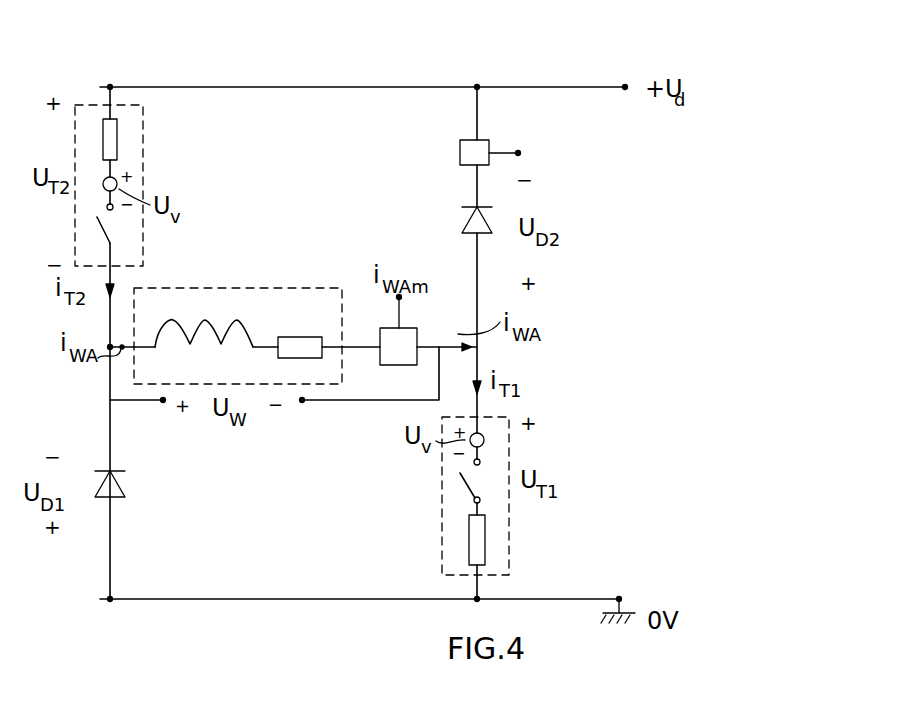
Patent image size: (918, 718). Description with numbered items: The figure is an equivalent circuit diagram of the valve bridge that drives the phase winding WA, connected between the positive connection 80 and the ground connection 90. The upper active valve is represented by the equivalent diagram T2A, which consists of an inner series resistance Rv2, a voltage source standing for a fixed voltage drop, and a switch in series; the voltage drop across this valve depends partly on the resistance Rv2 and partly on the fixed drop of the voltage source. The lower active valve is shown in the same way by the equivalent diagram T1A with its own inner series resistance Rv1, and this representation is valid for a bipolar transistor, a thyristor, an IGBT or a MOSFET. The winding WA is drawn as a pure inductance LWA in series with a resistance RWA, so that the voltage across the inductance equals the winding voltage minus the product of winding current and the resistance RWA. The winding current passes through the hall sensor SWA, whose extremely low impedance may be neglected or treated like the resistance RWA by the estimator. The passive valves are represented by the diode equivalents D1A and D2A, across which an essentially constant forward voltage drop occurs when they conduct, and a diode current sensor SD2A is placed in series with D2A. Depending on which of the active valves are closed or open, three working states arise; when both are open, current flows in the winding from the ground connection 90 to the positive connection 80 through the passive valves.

The positive connection 80 is at (626, 86).
The ground connection 90 is at (618, 587).
The valve T2 equivalent diagram T2A is at (143, 185).
The valve T1 equivalent diagram T1A is at (446, 496).
The passive valve D1 equivalent diagram D1A is at (125, 486).
The passive valve D2 equivalent diagram D2A is at (444, 213).
The winding WA is at (262, 286).
The winding inductance LWA is at (204, 319).
The winding resistance RWA is at (298, 324).
The hall sensor SWA is at (414, 328).
The diode current sensor SD2A is at (460, 152).
The inner series resistance Rv1 is at (445, 540).
The inner series resistance Rv2 is at (117, 137).